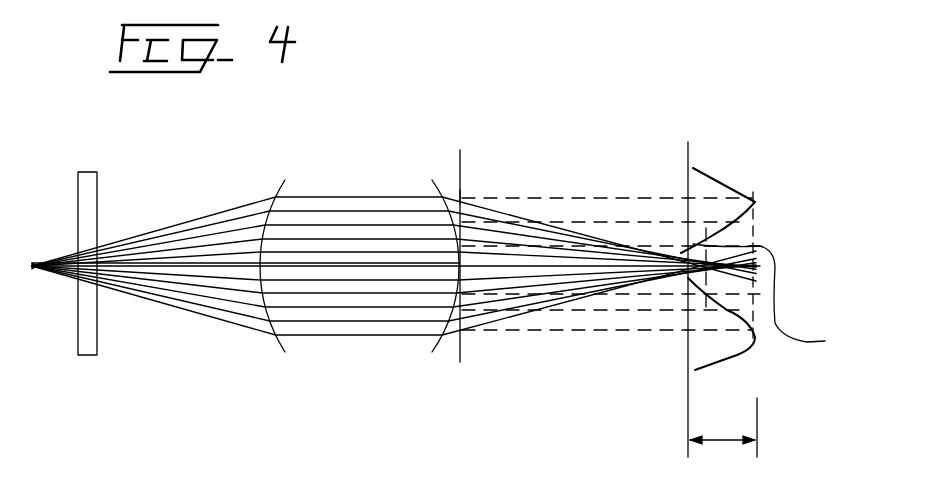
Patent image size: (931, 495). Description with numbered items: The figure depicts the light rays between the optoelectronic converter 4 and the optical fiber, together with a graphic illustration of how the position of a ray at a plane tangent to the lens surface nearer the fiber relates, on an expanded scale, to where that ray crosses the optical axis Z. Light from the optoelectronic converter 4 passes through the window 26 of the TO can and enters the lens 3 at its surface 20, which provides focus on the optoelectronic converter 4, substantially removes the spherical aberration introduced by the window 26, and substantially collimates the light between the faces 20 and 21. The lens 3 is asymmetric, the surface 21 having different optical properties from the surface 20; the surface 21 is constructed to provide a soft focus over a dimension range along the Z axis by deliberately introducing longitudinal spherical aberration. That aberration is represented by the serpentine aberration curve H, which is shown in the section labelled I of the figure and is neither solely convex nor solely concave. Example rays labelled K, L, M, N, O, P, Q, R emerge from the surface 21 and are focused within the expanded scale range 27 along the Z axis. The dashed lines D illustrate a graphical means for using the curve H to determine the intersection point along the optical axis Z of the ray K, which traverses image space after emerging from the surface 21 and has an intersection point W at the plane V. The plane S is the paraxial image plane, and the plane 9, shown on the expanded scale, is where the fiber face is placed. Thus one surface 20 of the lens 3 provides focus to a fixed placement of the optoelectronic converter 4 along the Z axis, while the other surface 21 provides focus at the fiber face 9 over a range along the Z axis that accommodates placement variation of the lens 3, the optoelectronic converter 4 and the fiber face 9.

The lens 3 is at (328, 274).
The optoelectronic converter 4 is at (32, 262).
The lens surface 20 is at (268, 312).
The lens surface 21 is at (438, 349).
The window 26 is at (98, 300).
The expanded scale range 27 is at (723, 427).
The fiber face 9 is at (766, 299).
The optical axis Z is at (857, 269).
The plane V is at (460, 170).
The intersection point W is at (460, 197).
The ray K is at (510, 232).
The ray L is at (566, 243).
The ray M is at (627, 248).
The ray N is at (499, 270).
The ray O is at (533, 283).
The ray P is at (573, 282).
The ray Q is at (620, 290).
The ray R is at (652, 293).
The paraxial image plane S is at (688, 338).
The section I is at (724, 163).
The aberration curve H is at (737, 355).
The dashed lines D is at (757, 233).